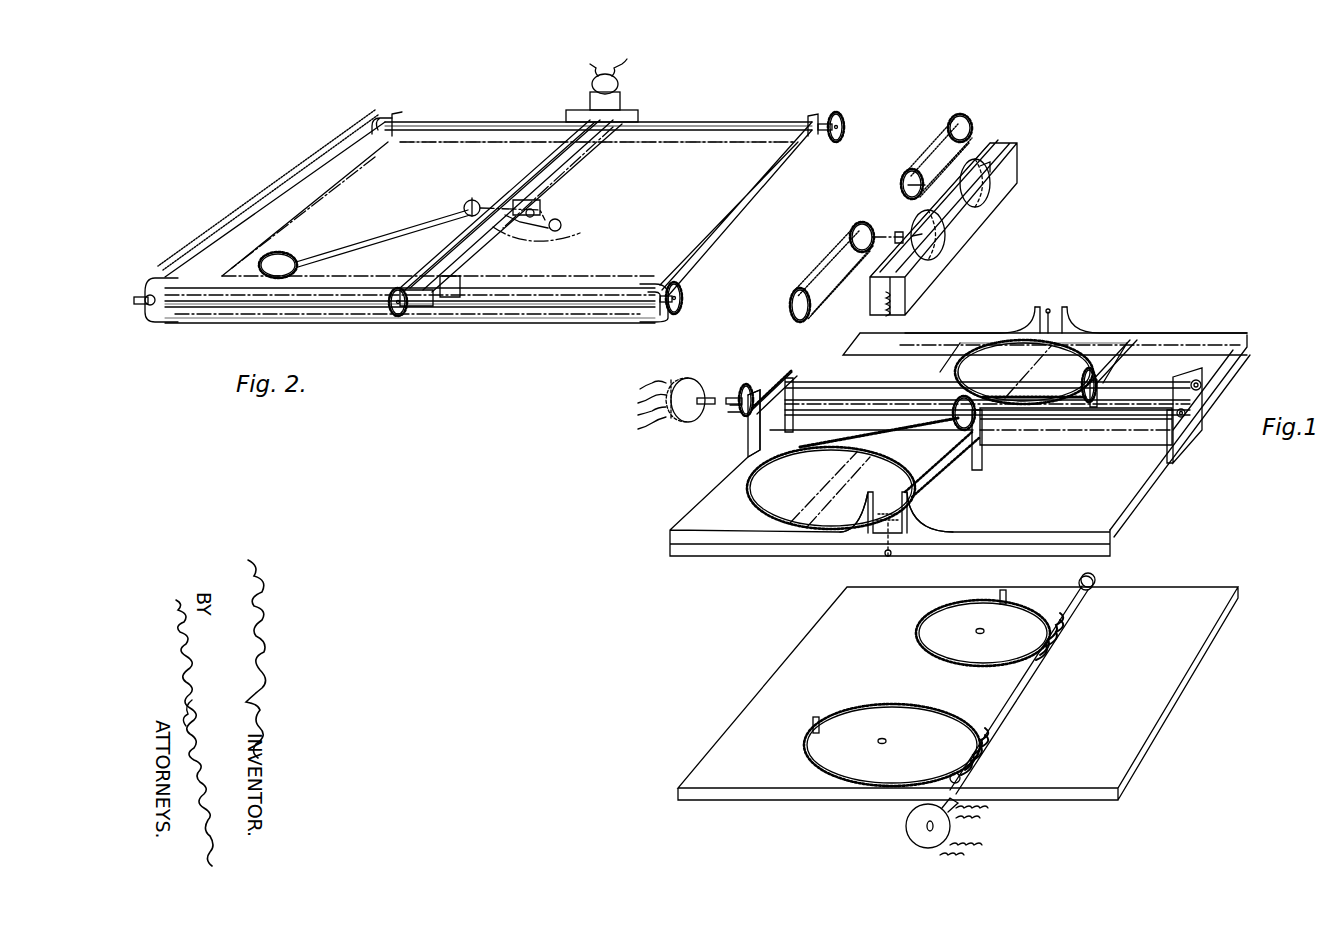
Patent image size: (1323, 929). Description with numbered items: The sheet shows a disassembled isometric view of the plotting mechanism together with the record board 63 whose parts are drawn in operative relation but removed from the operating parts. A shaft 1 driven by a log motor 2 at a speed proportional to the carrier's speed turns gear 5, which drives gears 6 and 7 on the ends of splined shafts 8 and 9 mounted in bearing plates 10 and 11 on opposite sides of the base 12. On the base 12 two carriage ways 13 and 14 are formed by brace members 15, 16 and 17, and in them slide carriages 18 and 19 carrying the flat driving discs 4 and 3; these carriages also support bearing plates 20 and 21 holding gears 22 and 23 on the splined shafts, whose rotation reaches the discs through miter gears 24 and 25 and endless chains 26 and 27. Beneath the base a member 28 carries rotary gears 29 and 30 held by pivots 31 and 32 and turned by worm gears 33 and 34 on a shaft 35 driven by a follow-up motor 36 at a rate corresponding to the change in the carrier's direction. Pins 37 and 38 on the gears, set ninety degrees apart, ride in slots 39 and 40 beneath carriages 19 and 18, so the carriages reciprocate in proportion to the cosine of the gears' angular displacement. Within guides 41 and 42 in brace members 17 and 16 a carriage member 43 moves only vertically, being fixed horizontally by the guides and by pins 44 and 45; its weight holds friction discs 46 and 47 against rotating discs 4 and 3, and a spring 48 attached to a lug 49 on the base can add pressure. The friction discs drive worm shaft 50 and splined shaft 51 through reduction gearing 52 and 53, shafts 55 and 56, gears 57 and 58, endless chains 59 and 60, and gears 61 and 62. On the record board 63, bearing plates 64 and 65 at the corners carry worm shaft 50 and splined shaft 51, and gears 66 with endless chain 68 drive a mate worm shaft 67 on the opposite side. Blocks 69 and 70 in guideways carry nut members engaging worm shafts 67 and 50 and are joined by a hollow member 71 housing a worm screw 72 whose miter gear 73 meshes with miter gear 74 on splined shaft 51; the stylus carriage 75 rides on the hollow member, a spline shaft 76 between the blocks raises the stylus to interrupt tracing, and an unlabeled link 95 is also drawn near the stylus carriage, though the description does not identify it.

In FIG. 1, the shaft 1 is at (731, 398).
In FIG. 1, the log motor 2 is at (690, 388).
In FIG. 1, the flat driving disc 3 is at (831, 488).
In FIG. 1, the flat driving disc 4 is at (1024, 372).
In FIG. 1, the gear 5 is at (748, 388).
In FIG. 1, the gear 6 is at (779, 378).
In FIG. 1, the gear 7 is at (740, 412).
In FIG. 1, the splined shaft 8 is at (799, 384).
In FIG. 1, the splined shaft 9 is at (823, 412).
In FIG. 1, the bearing plate 10 is at (748, 430).
In FIG. 1, the bearing plate 11 is at (1184, 430).
In FIG. 1, the base 12 is at (1203, 387).
In FIG. 1, the carriage way 13 is at (1153, 436).
In FIG. 1, the carriage way 14 is at (1045, 358).
In FIG. 1, the brace member 15 is at (1094, 430).
In FIG. 1, the brace member 16 is at (1152, 333).
In FIG. 1, the brace member 17 is at (846, 540).
In FIG. 1, the carriage 18 is at (1124, 343).
In FIG. 1, the carriage 19 is at (890, 473).
In FIG. 1, the bearing plate 20 is at (1099, 398).
In FIG. 1, the bearing plate 21 is at (980, 432).
In FIG. 1, the gear 22 is at (1089, 370).
In FIG. 1, the gear 23 is at (958, 406).
In FIG. 1, the miter gear 24 is at (1034, 395).
In FIG. 1, the miter gear 25 is at (950, 427).
In FIG. 1, the endless chain 26 is at (960, 380).
In FIG. 1, the endless chain 27 is at (935, 478).
In FIG. 1, the member 28 is at (958, 693).
In FIG. 1, the rotary gear 29 is at (892, 745).
In FIG. 1, the rotary gear 30 is at (983, 633).
In FIG. 1, the pivot 31 is at (893, 746).
In FIG. 1, the pivot 32 is at (993, 632).
In FIG. 1, the worm gear 33 is at (985, 762).
In FIG. 1, the worm gear 34 is at (1062, 645).
In FIG. 1, the shaft 35 is at (1029, 686).
In FIG. 1, the follow-up motor 36 is at (955, 832).
In FIG. 1, the pin 37 is at (813, 720).
In FIG. 1, the pin 38 is at (1001, 592).
In FIG. 1, the slot 39 is at (790, 522).
In FIG. 1, the slot 40 is at (1055, 345).
In FIG. 1, the guide 41 is at (870, 536).
In FIG. 1, the guide 42 is at (1066, 312).
In FIG. 1, the carriage member 43 is at (920, 290).
In FIG. 1, the pin 44 is at (1048, 308).
In FIG. 1, the pin 45 is at (893, 524).
In FIG. 1, the friction disc 46 is at (968, 178).
In FIG. 1, the friction disc 47 is at (924, 235).
In FIG. 1, the spring 48 is at (893, 320).
In FIG. 1, the lug 49 is at (886, 558).
In FIG. 2, the worm shaft 50 is at (712, 130).
In FIG. 2, the splined shaft 51 is at (577, 300).
In FIG. 1, the reduction gearing 52 is at (940, 185).
In FIG. 1, the reduction gearing 53 is at (880, 272).
In FIG. 1, the shaft 55 is at (816, 305).
In FIG. 1, the shaft 56 is at (969, 125).
In FIG. 1, the gear 57 is at (852, 230).
In FIG. 1, the gear 58 is at (903, 182).
In FIG. 1, the endless chain 59 is at (828, 256).
In FIG. 1, the endless chain 60 is at (945, 133).
In FIG. 2, the gear 61 is at (680, 306).
In FIG. 2, the gear 62 is at (840, 124).
In FIG. 2, the record board 63 is at (597, 180).
In FIG. 2, the bearing plate 64 is at (395, 122).
In FIG. 2, the bearing plate 65 is at (657, 318).
In FIG. 2, the gear 66 is at (157, 283).
In FIG. 2, the mate worm shaft 67 is at (560, 286).
In FIG. 2, the endless chain 68 is at (308, 166).
In FIG. 2, the block 69 is at (462, 288).
In FIG. 2, the block 70 is at (612, 126).
In FIG. 2, the hollow member 71 is at (532, 190).
In FIG. 2, the worm screw 72 is at (547, 168).
In FIG. 2, the miter gear 73 is at (392, 312).
In FIG. 2, the miter gear 74 is at (400, 316).
In FIG. 2, the stylus carriage 75 is at (510, 222).
In FIG. 2, the spline shaft 76 is at (515, 180).
In FIG. 2, the link rod 95 is at (500, 200).